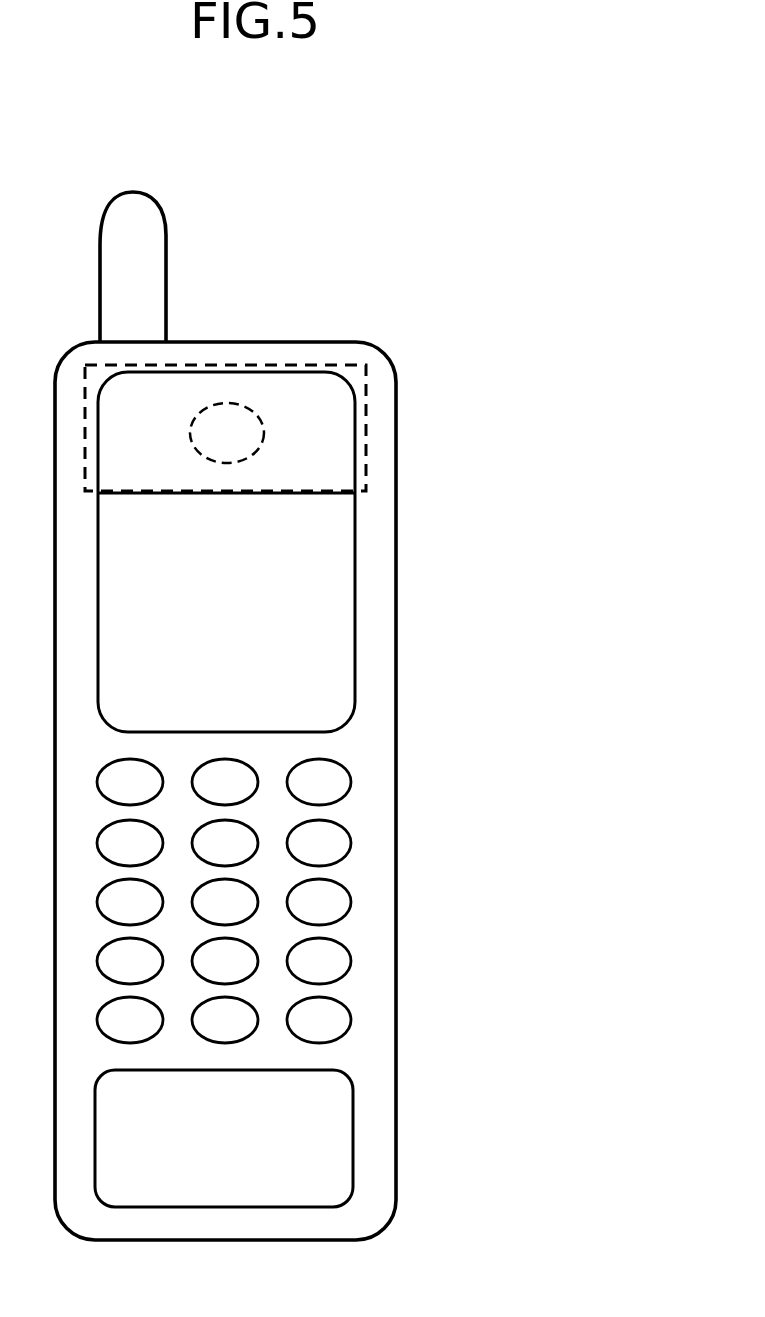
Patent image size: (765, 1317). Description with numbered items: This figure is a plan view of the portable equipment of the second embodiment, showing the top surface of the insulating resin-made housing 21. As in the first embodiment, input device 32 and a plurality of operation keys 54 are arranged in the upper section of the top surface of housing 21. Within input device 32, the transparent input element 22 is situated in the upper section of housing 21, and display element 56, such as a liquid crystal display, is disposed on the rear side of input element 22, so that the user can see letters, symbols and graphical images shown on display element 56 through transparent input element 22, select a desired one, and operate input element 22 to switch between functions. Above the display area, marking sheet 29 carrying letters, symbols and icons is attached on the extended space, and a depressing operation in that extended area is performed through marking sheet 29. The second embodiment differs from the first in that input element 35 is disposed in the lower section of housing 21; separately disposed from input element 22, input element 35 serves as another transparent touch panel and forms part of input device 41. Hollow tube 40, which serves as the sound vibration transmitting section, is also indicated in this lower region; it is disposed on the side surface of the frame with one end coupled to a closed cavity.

The housing 21 is at (387, 358).
The marking sheet 29 is at (335, 365).
The input device 32 is at (365, 552).
The input element 22 is at (245, 608).
The display element 56 is at (288, 537).
The operation keys 54 is at (352, 1020).
The hollow tube 40 is at (232, 1075).
The input device 41 is at (362, 1156).
The input element 35 is at (232, 1147).